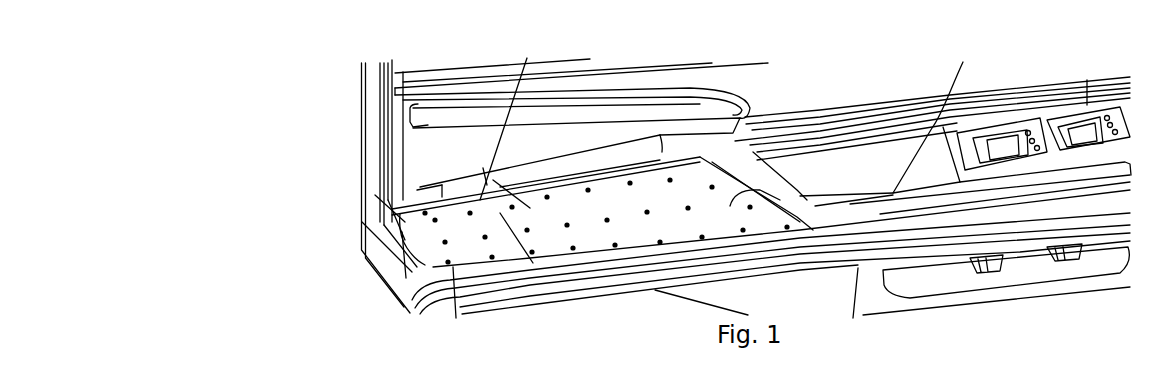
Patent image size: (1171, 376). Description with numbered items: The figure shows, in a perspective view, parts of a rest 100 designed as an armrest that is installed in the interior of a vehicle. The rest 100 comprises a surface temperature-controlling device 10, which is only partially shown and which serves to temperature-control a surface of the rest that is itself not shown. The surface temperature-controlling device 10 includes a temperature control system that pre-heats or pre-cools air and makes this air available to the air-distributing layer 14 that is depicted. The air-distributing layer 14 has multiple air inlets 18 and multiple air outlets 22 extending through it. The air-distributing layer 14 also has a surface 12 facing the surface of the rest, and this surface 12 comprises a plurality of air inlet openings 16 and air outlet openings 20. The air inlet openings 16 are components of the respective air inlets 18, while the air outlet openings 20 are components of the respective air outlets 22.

The rest 100 is at (345, 116).
The surface temperature-controlling device 10 is at (443, 195).
The surface 12 is at (790, 194).
The air-distributing layer 14 is at (434, 253).
The air inlet openings 16 is at (569, 218).
The air inlets 18 is at (556, 190).
The air outlet openings 20 is at (508, 195).
The air outlets 22 is at (527, 137).